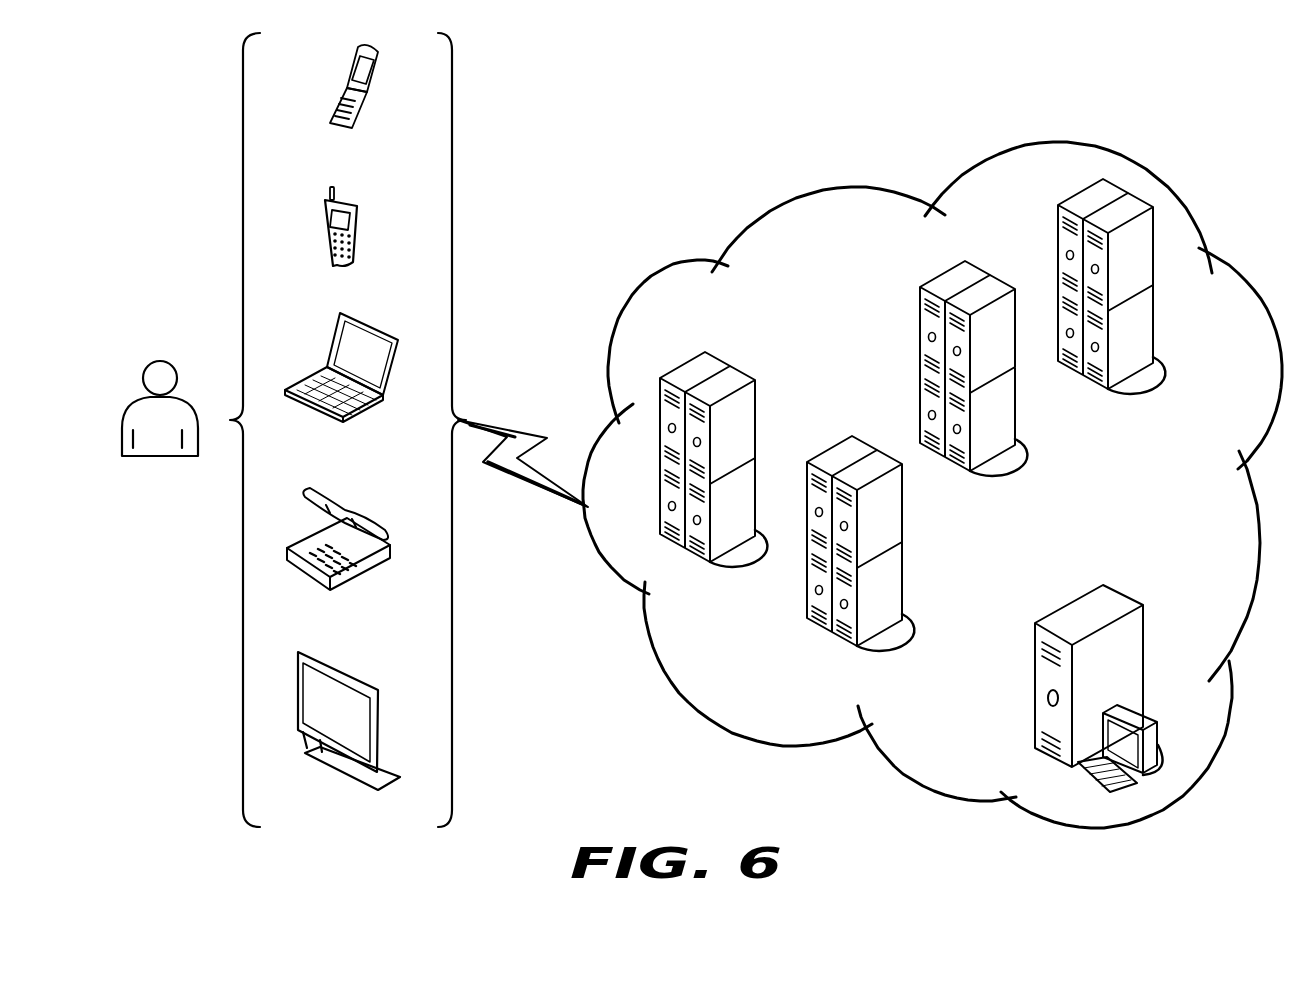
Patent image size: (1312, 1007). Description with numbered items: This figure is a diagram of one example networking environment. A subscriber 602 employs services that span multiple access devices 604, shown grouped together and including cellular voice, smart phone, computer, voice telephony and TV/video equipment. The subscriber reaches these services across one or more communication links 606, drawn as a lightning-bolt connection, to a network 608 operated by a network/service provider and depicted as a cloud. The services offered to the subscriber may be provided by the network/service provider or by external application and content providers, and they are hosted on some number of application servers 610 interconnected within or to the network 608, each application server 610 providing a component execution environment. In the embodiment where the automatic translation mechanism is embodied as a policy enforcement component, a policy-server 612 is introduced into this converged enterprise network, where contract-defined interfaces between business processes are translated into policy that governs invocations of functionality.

The subscriber 602 is at (150, 362).
The access devices 604 is at (285, 772).
The communication links 606 is at (522, 438).
The network 608 is at (650, 277).
The application servers 610 is at (1090, 197).
The policy-server 612 is at (1150, 750).